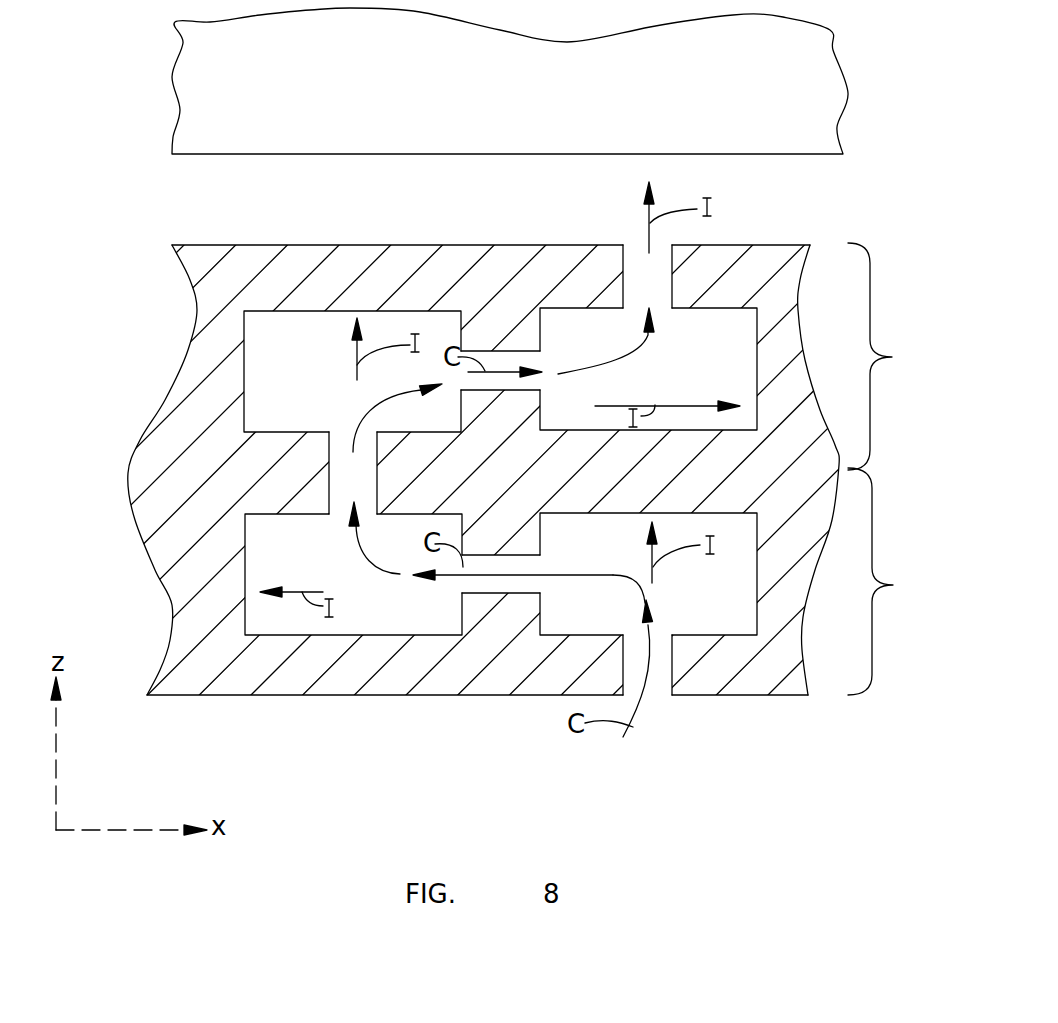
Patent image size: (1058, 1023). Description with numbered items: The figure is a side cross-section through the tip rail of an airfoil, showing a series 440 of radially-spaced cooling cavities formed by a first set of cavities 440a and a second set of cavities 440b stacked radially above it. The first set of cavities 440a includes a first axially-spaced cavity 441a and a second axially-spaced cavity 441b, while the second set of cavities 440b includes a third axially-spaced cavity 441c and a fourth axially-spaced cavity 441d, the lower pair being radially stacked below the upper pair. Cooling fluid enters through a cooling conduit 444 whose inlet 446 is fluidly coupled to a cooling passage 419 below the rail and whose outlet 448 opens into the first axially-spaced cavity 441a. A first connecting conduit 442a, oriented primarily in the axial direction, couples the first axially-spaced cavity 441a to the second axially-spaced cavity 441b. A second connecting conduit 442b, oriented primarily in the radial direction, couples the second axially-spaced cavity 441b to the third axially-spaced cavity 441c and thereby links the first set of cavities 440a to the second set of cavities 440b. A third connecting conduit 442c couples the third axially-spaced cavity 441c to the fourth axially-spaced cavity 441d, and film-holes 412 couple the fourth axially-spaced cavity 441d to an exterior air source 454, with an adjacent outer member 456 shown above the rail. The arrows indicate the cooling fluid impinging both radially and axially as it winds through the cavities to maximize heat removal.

The upper member / substrate 456 is at (515, 122).
The exterior air source 454 is at (233, 229).
The series of radially-spaced cooling cavities 440 is at (152, 370).
The second set of cavities 440b is at (905, 356).
The first set of cavities 440a is at (905, 581).
The film-holes 412 is at (653, 273).
The third axially-spaced cavity 441c is at (328, 343).
The fourth axially-spaced cavity 441d is at (748, 344).
The second axially-spaced cavity 441b is at (327, 541).
The first axially-spaced cavity 441a is at (611, 552).
The third connecting conduit 442c is at (525, 358).
The second connecting conduit 442b is at (338, 455).
The first connecting conduit 442a is at (480, 585).
The inlet 446 is at (657, 697).
The outlet 448 is at (660, 632).
The cooling conduit 444 is at (660, 668).
The cooling passage 419 is at (466, 740).